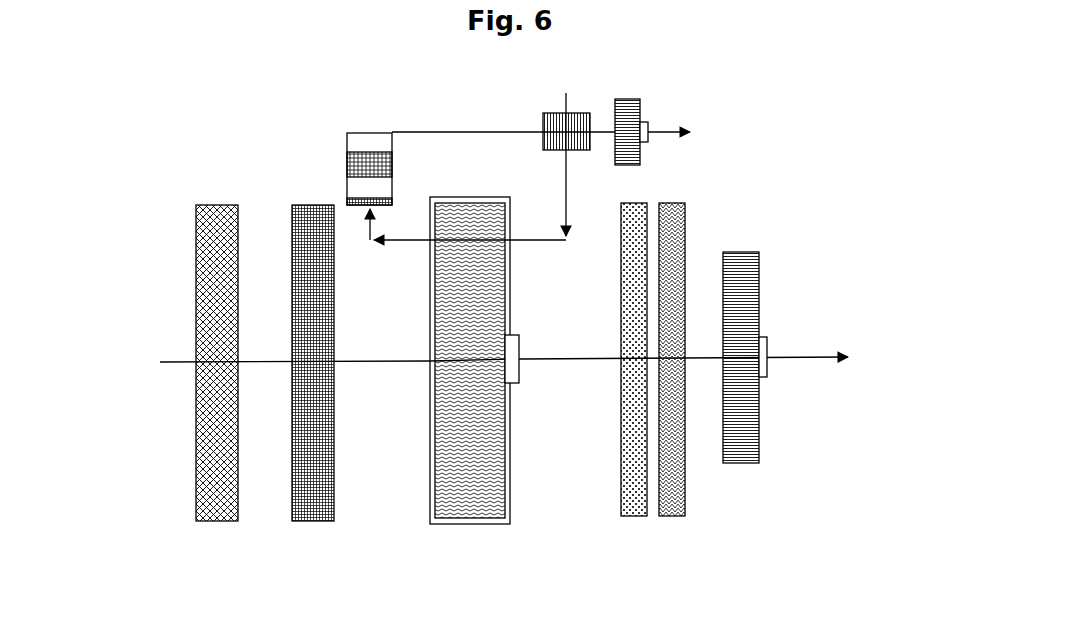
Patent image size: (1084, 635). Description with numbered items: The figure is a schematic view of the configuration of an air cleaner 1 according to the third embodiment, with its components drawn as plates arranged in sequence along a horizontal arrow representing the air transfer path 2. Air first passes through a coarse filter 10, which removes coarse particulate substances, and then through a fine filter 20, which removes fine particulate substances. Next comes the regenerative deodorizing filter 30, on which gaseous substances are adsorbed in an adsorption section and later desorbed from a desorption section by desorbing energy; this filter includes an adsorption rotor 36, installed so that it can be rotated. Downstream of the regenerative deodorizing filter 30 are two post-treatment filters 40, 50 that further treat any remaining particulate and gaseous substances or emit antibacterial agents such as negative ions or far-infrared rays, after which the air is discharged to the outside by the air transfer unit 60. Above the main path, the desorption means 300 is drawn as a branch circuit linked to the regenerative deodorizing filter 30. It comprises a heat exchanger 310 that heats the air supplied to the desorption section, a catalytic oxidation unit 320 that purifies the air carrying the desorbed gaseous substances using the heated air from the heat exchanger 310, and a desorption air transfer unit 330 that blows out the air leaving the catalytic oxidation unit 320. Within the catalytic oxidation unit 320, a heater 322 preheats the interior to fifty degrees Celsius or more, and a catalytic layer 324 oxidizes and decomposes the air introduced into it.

The air cleaner 1 is at (754, 160).
The air transfer path 2 is at (808, 352).
The coarse filter 10 is at (218, 519).
The fine filter 20 is at (312, 519).
The regenerative deodorizing filter 30 is at (464, 531).
The adsorption rotor 36 is at (497, 490).
The post-treatment filter 40 is at (636, 512).
The post-treatment filter 50 is at (673, 513).
The air transfer unit 60 is at (742, 460).
The desorption means 300 is at (461, 128).
The heat exchanger 310 is at (582, 118).
The catalytic oxidation unit 320 is at (371, 129).
The heater 322 is at (350, 197).
The catalytic layer 324 is at (350, 153).
The desorption air transfer unit 330 is at (632, 110).